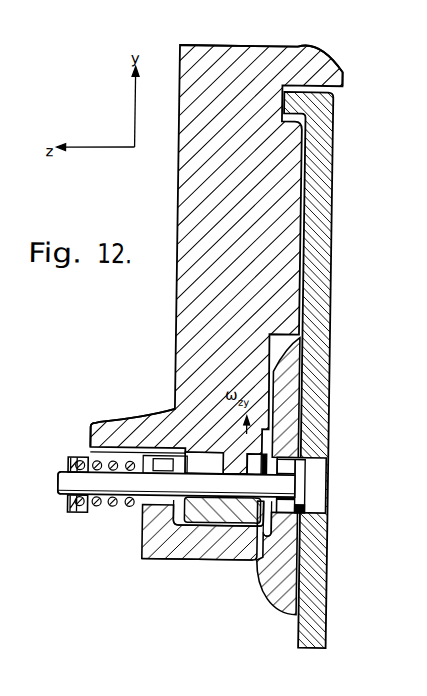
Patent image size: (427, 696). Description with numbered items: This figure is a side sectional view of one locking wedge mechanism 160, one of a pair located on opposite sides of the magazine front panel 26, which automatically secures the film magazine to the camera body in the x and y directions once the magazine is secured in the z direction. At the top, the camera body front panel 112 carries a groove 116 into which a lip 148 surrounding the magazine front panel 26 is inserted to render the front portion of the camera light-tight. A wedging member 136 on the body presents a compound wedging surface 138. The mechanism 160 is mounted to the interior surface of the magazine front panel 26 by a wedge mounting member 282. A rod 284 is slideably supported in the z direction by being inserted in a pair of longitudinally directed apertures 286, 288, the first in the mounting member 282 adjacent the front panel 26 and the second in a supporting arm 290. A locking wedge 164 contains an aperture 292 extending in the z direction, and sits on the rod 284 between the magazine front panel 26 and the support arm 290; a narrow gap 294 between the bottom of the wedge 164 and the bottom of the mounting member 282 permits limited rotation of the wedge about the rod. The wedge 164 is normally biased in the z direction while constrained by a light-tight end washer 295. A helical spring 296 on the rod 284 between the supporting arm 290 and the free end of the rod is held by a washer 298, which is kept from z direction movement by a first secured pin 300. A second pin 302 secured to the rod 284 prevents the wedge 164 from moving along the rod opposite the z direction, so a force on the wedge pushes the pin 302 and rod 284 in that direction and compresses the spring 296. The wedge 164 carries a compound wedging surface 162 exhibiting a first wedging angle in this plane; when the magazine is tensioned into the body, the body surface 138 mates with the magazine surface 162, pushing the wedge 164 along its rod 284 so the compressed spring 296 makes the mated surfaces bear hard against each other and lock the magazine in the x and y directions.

The magazine front panel 26 is at (330, 236).
The camera body front panel 112 is at (327, 47).
The groove 116 is at (307, 45).
The lip 148 is at (286, 106).
The wedging member 136 is at (168, 425).
The compound wedging surface 138 is at (237, 444).
The locking wedge mechanism 160 is at (166, 597).
The compound wedging surface 162 is at (202, 451).
The locking wedge 164 is at (226, 464).
The wedge mounting member 282 is at (208, 548).
The rod 284 is at (113, 488).
The aperture 286 is at (306, 475).
The aperture 288 is at (147, 518).
The supporting arm 290 is at (161, 461).
The aperture 292 is at (160, 559).
The gap 294 is at (270, 529).
The light-tight end washer 295 is at (312, 499).
The helical spring 296 is at (88, 454).
The washer 298 is at (82, 457).
The first secured pin 300 is at (76, 510).
The second pin 302 is at (290, 442).